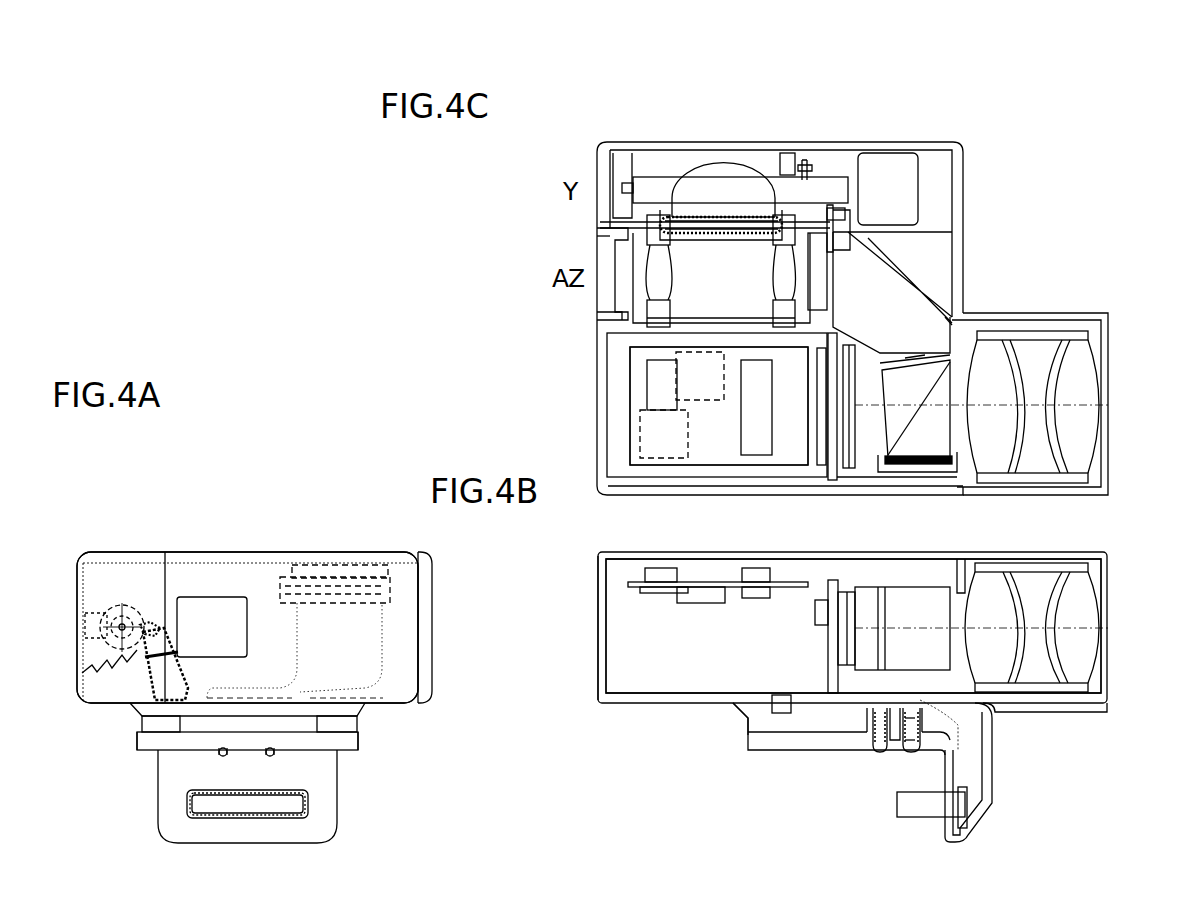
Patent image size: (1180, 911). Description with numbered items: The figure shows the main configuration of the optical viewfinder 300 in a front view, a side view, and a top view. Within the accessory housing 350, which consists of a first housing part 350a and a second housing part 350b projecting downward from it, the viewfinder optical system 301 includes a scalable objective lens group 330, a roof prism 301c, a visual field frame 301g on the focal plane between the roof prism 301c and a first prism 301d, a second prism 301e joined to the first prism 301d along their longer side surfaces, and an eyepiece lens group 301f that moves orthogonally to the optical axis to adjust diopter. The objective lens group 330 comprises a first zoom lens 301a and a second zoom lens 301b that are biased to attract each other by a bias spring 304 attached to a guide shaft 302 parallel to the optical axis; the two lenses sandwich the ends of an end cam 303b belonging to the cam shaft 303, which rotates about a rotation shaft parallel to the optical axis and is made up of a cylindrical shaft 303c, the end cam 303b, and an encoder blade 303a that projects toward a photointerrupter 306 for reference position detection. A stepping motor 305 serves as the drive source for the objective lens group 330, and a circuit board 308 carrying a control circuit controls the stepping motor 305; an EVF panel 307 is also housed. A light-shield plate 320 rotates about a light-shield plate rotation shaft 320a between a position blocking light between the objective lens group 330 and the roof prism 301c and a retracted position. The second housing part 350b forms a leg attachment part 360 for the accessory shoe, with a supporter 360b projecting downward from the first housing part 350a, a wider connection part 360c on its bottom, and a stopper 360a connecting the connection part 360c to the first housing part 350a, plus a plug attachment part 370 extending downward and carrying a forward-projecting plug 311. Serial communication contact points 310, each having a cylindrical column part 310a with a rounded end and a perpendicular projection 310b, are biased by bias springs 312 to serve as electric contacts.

In FIG. 4A, the optical viewfinder 300 is at (265, 498).
In FIG. 4B, the optical viewfinder 300 is at (568, 575).
In FIG. 4C, the optical viewfinder 300 is at (572, 154).
In FIG. 4A, the viewfinder optical system 301 is at (215, 595).
In FIG. 4C, the viewfinder optical system 301 is at (592, 258).
In FIG. 4C, the first zoom lens 301a is at (662, 246).
In FIG. 4C, the second zoom lens 301b is at (778, 290).
In FIG. 4C, the roof prism 301c is at (850, 262).
In FIG. 4C, the first prism 301d is at (893, 457).
In FIG. 4C, the second prism 301e is at (928, 463).
In FIG. 4B, the eyepiece lens group 301f is at (982, 625).
In FIG. 4C, the eyepiece lens group 301f is at (1077, 311).
In FIG. 4C, the visual field frame 301g is at (952, 317).
In FIG. 4C, the guide shaft 302 is at (625, 225).
In FIG. 4A, the cam shaft 303 is at (133, 596).
In FIG. 4C, the cam shaft 303 is at (723, 163).
In FIG. 4A, the encoder blade 303a is at (106, 622).
In FIG. 4C, the encoder blade 303a is at (805, 160).
In FIG. 4C, the end cam 303b is at (765, 205).
In FIG. 4C, the shaft 303c is at (655, 177).
In FIG. 4C, the bias spring 304 is at (700, 168).
In FIG. 4C, the stepping motor 305 is at (896, 165).
In FIG. 4A, the photointerrupter 306 is at (92, 617).
In FIG. 4C, the photointerrupter 306 is at (787, 153).
In FIG. 4B, the EVF panel 307 is at (828, 683).
In FIG. 4C, the EVF panel 307 is at (835, 462).
In FIG. 4A, the circuit board 308 is at (395, 584).
In FIG. 4B, the circuit board 308 is at (635, 586).
In FIG. 4C, the circuit board 308 is at (632, 464).
In FIG. 4A, the serial communication contact points 310 is at (268, 757).
In FIG. 4B, the serial communication contact points 310 is at (910, 752).
In FIG. 4B, the cylindrical column part 310a is at (912, 720).
In FIG. 4B, the projection 310b is at (912, 740).
In FIG. 4A, the plug 311 is at (292, 803).
In FIG. 4B, the plug 311 is at (905, 805).
In FIG. 4B, the bias springs 312 is at (872, 720).
In FIG. 4A, the light-shield plate 320 is at (148, 678).
In FIG. 4C, the light-shield plate 320 is at (862, 232).
In FIG. 4A, the light-shield plate rotation shaft 320a is at (152, 622).
In FIG. 4C, the light-shield plate rotation shaft 320a is at (836, 208).
In FIG. 4C, the objective lens group 330 is at (615, 319).
In FIG. 4A, the accessory housing 350 is at (376, 549).
In FIG. 4B, the accessory housing 350 is at (635, 730).
In FIG. 4C, the accessory housing 350 is at (596, 403).
In FIG. 4A, the first housing part 350a is at (432, 635).
In FIG. 4B, the first housing part 350a is at (597, 673).
In FIG. 4B, the second housing part 350b is at (746, 725).
In FIG. 4A, the leg attachment part 360 is at (377, 742).
In FIG. 4B, the leg attachment part 360 is at (765, 780).
In FIG. 4A, the stopper 360a is at (345, 723).
In FIG. 4A, the supporter 360b is at (173, 720).
In FIG. 4A, the connection part 360c is at (357, 740).
In FIG. 4A, the plug attachment part 370 is at (157, 805).
In FIG. 4B, the plug attachment part 370 is at (996, 790).